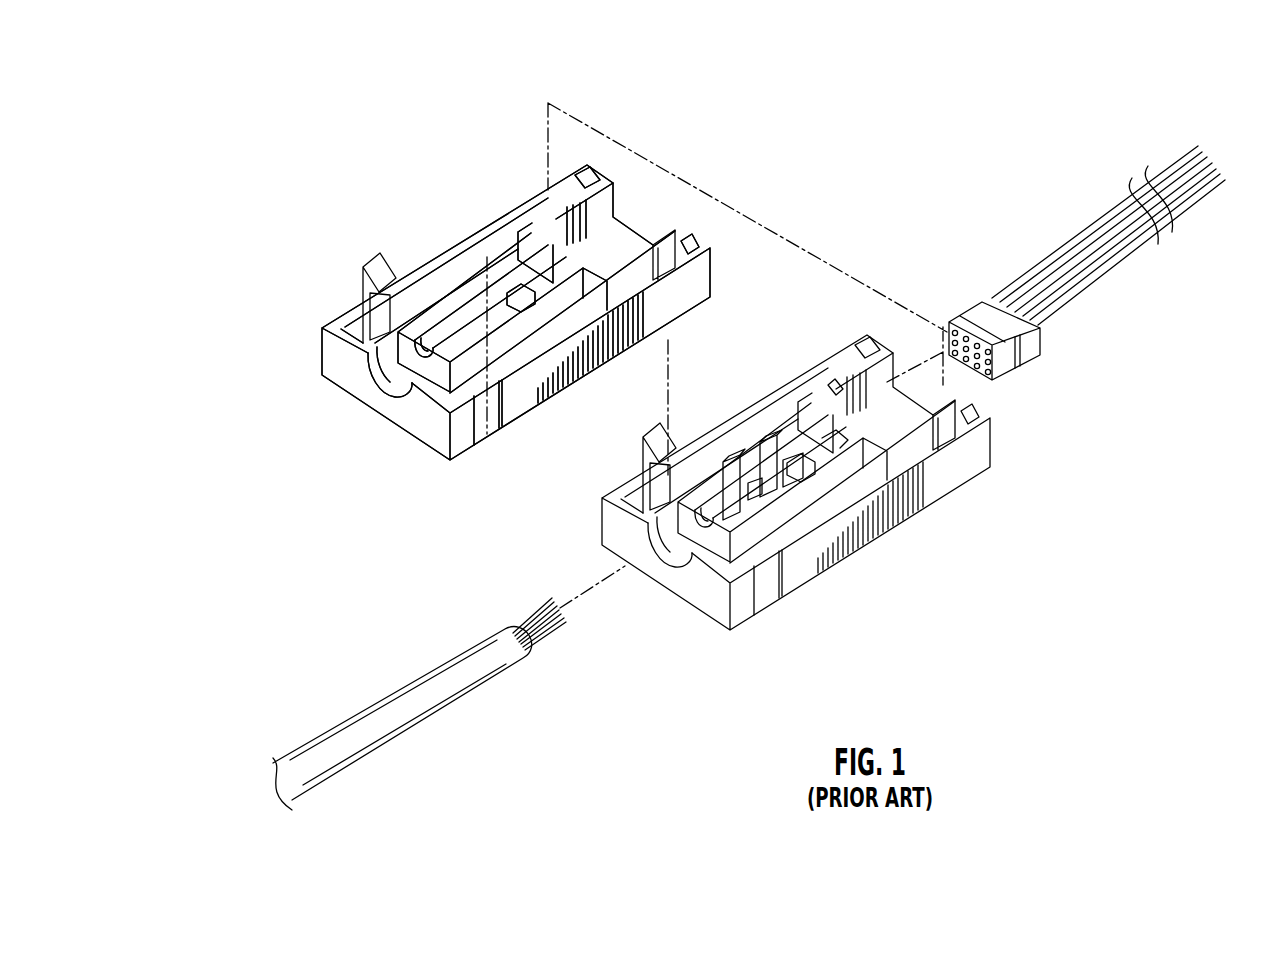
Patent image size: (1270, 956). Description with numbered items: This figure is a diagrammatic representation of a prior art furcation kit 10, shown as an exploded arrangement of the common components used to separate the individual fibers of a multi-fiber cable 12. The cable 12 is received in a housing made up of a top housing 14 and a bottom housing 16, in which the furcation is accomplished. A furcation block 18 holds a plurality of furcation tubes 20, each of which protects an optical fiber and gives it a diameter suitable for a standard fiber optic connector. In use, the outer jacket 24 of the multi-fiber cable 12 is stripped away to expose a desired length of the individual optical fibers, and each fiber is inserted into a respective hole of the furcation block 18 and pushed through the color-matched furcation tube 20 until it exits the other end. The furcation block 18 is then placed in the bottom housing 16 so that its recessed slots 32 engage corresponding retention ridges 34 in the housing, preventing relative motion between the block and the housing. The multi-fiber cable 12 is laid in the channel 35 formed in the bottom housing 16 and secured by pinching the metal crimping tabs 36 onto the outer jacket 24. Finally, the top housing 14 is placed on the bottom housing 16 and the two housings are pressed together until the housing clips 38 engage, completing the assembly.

The furcation kit 10 is at (292, 118).
The multi-fiber cable 12 is at (278, 619).
The top housing 14 is at (497, 206).
The bottom housing 16 is at (897, 527).
The furcation block 18 is at (998, 303).
The furcation tubes 20 is at (1108, 205).
The outer jacket 24 is at (348, 743).
The recessed slots 32 is at (1020, 350).
The retention ridges 34 is at (830, 387).
The channel 35 is at (830, 430).
The metal crimping tabs 36 is at (767, 433).
The housing clips 38 is at (363, 285).